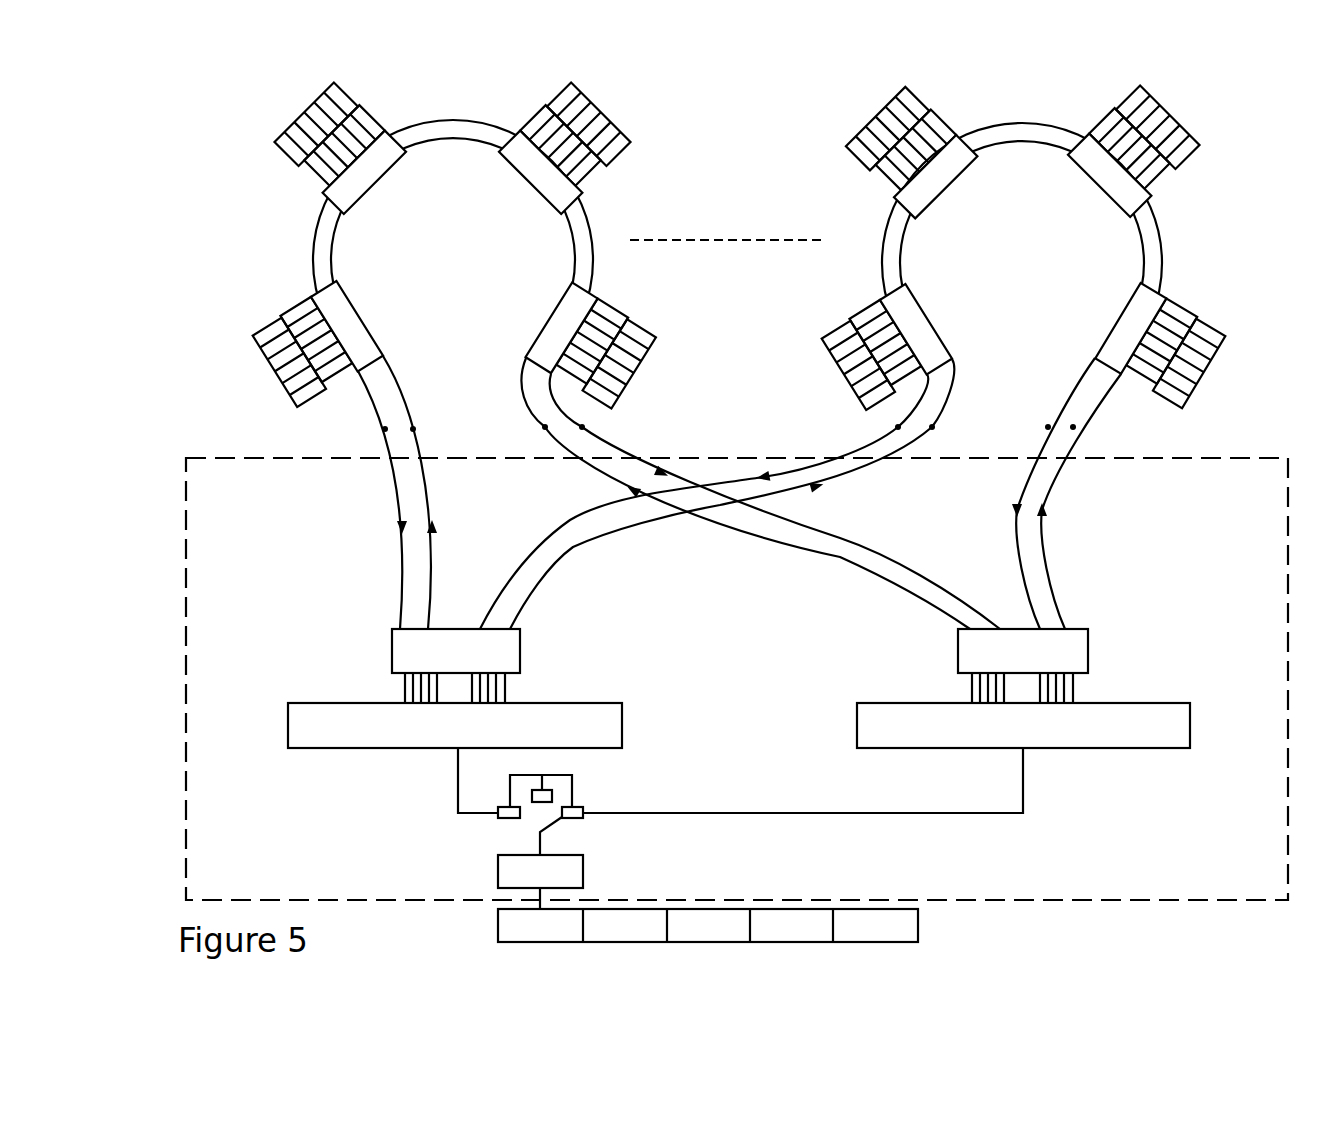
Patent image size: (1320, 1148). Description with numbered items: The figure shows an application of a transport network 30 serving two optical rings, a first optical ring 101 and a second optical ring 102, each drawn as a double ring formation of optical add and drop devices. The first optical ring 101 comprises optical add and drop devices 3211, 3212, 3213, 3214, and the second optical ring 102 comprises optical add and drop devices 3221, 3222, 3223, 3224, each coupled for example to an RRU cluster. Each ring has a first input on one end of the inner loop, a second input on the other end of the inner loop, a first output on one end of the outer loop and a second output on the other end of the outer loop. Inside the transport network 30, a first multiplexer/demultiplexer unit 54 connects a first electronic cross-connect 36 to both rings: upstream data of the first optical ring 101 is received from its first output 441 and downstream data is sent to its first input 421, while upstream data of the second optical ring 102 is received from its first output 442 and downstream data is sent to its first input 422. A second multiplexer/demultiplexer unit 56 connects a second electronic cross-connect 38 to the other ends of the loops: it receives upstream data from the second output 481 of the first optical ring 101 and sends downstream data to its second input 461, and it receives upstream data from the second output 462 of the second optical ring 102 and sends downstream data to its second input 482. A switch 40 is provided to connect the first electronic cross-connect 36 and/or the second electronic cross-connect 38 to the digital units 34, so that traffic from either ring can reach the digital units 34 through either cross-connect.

The first optical ring 101 is at (453, 115).
The second optical ring 102 is at (1019, 117).
The optical add and drop device 3211 is at (308, 296).
The optical add and drop device 3212 is at (322, 186).
The optical add and drop device 3213 is at (584, 190).
The optical add and drop device 3214 is at (597, 297).
The optical add and drop device 3221 is at (878, 299).
The optical add and drop device 3222 is at (892, 188).
The optical add and drop device 3223 is at (1152, 193).
The optical add and drop device 3224 is at (1165, 300).
The first output 441 is at (385, 429).
The first input 421 is at (413, 429).
The second input 461 is at (544, 427).
The second output 481 is at (582, 427).
The first output 442 is at (898, 427).
The first input 422 is at (932, 427).
The second output 462 is at (1048, 427).
The second input 482 is at (1073, 427).
The transport network 30 is at (186, 502).
The first multiplexer/demultiplexer unit 54 is at (392, 650).
The second multiplexer/demultiplexer unit 56 is at (958, 650).
The first electronic cross-connect 36 is at (288, 728).
The second electronic cross-connect 38 is at (857, 728).
The switch 40 is at (498, 872).
The digital units 34 is at (919, 925).